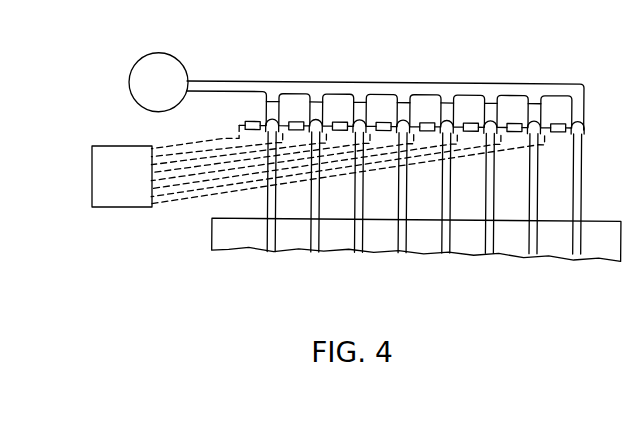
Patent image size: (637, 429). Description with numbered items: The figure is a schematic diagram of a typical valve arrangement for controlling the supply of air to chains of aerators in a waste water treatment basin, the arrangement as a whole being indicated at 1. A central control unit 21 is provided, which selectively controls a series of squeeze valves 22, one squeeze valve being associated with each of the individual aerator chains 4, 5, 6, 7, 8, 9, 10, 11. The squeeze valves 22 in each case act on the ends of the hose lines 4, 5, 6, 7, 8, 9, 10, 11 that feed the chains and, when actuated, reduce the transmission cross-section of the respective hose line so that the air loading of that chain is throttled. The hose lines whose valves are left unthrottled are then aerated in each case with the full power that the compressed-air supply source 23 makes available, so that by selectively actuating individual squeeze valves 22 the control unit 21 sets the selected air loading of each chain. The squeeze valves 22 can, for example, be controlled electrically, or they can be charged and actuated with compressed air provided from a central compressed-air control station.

The apparatus 1 is at (603, 226).
The aerator chain / hose line 4 is at (245, 207).
The aerator chain / hose line 5 is at (289, 207).
The aerator chain / hose line 6 is at (334, 207).
The aerator chain / hose line 7 is at (380, 207).
The aerator chain / hose line 8 is at (423, 207).
The aerator chain / hose line 9 is at (467, 207).
The aerator chain / hose line 10 is at (512, 207).
The aerator chain / hose line 11 is at (553, 207).
The central control unit 21 is at (126, 209).
The squeeze valve 22 is at (253, 119).
The compressed-air supply source 23 is at (153, 54).